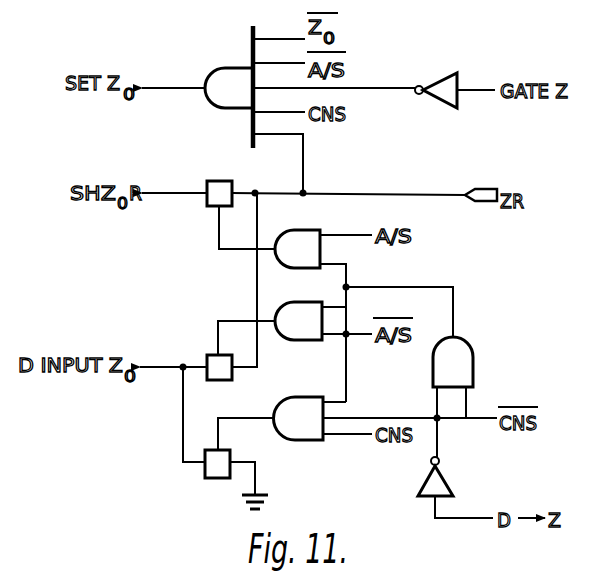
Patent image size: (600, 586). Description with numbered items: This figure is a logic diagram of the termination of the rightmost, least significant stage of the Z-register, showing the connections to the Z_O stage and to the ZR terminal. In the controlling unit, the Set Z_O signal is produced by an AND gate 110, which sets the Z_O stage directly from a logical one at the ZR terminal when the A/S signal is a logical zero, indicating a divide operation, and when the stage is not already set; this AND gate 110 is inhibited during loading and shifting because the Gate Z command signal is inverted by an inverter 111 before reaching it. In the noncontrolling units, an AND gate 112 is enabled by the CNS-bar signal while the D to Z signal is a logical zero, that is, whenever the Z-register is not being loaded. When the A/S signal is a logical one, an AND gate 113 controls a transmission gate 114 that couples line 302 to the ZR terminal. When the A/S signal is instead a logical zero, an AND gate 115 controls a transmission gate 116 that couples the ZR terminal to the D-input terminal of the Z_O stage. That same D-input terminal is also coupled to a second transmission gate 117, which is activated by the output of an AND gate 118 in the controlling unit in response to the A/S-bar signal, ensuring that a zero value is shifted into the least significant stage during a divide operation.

The AND gate 110 is at (234, 68).
The inverter 111 is at (449, 78).
The AND gate 112 is at (474, 353).
The AND gate 113 is at (309, 212).
The transmission gate 114 is at (226, 181).
The AND gate 115 is at (303, 302).
The transmission gate 116 is at (211, 355).
The second transmission gate 117 is at (221, 478).
The AND gate 118 is at (313, 397).
The line 302 is at (186, 194).